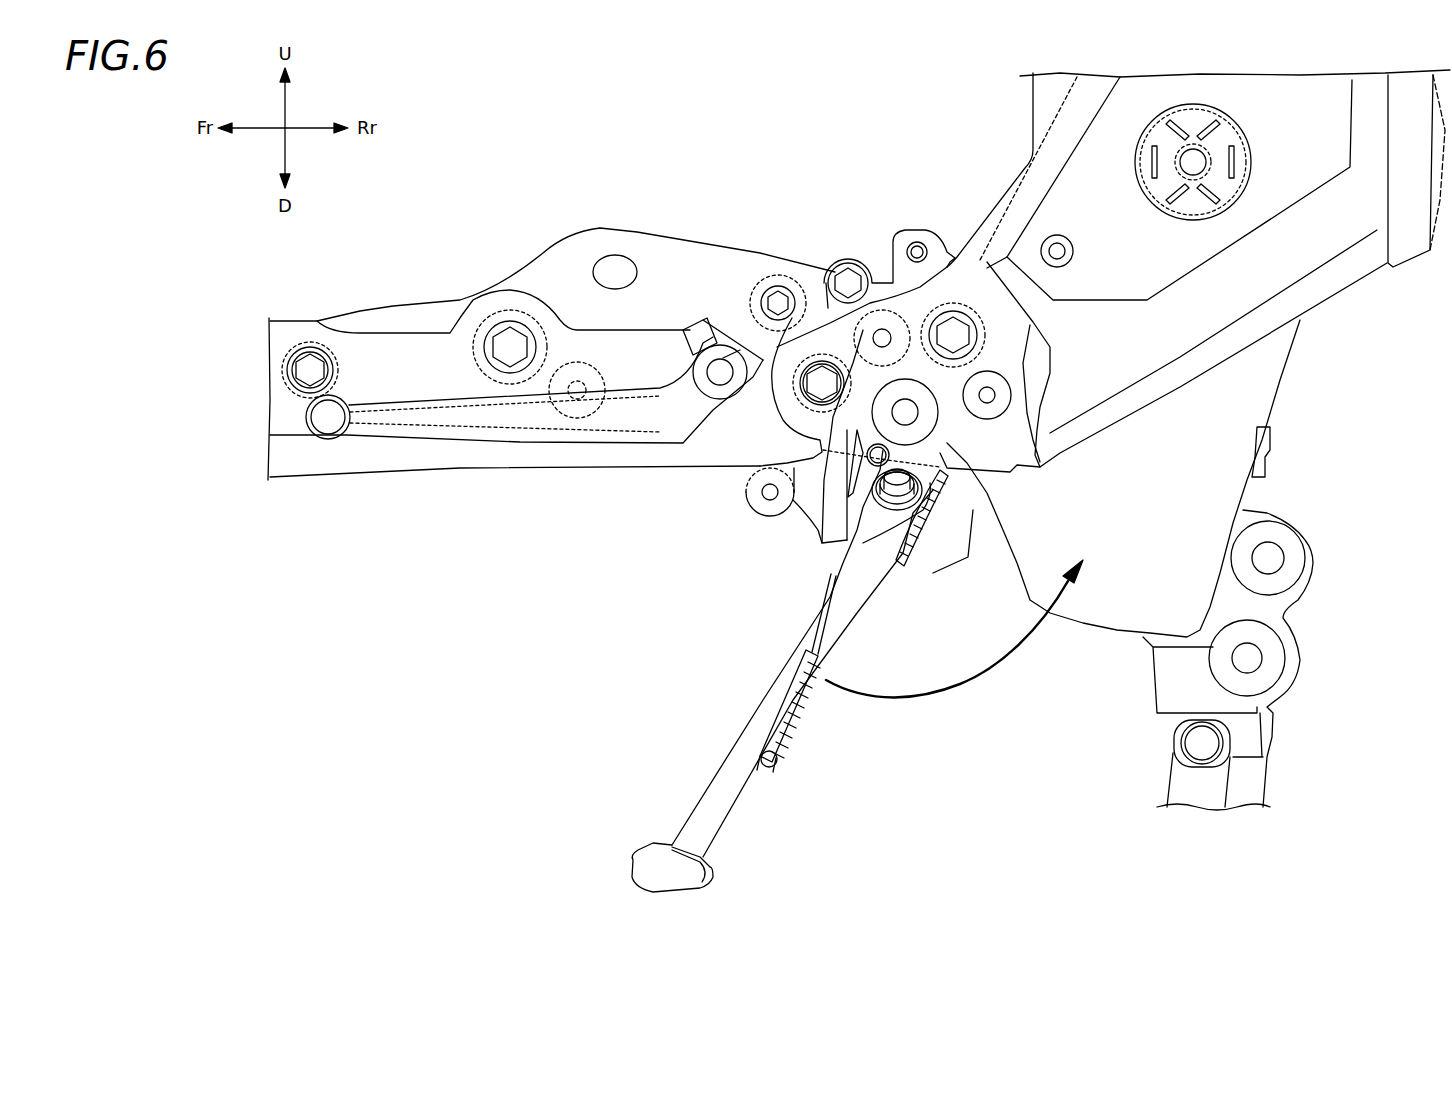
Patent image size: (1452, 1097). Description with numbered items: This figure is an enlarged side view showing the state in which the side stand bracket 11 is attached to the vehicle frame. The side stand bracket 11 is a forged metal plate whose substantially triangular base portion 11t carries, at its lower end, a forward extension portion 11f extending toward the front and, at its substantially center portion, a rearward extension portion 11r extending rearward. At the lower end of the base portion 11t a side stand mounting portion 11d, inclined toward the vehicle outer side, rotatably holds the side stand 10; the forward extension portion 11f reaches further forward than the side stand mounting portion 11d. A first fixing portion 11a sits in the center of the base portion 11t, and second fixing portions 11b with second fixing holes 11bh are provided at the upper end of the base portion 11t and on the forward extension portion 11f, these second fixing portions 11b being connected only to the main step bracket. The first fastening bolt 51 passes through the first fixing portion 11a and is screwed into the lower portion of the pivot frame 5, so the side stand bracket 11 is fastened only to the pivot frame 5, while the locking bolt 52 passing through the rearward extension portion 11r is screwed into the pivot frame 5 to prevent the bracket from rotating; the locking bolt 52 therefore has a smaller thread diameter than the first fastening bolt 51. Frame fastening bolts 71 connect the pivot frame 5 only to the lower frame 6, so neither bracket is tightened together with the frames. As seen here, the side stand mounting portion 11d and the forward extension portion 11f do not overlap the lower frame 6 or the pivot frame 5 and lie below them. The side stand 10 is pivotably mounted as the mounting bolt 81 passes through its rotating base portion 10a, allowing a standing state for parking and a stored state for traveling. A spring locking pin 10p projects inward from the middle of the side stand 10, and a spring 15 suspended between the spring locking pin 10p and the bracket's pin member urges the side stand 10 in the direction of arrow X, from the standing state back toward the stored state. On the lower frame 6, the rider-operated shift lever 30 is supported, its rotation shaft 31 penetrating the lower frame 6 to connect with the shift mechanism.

The pivot frame 5 is at (1013, 173).
The lower frame 6 is at (552, 252).
The side stand 10 is at (710, 772).
The rotating base portion 10a is at (883, 520).
The spring locking pin 10p is at (777, 767).
The side stand bracket 11 is at (820, 545).
The first fixing portion 11a is at (985, 480).
The second fixing portion 11b is at (848, 262).
The second fixing hole 11bh is at (882, 328).
The side stand mounting portion 11d is at (940, 520).
The forward extension portion 11f is at (770, 518).
The rearward extension portion 11r is at (1052, 343).
The base portion 11t is at (772, 392).
The spring 15 is at (810, 702).
The shift lever 30 is at (487, 420).
The rotation shaft 31 is at (718, 358).
The first fastening bolt 51 is at (930, 412).
The locking bolt 52 is at (998, 393).
The frame fastening bolt 71 is at (822, 380).
The mounting bolt 81 is at (950, 497).
The arrow X is at (964, 686).